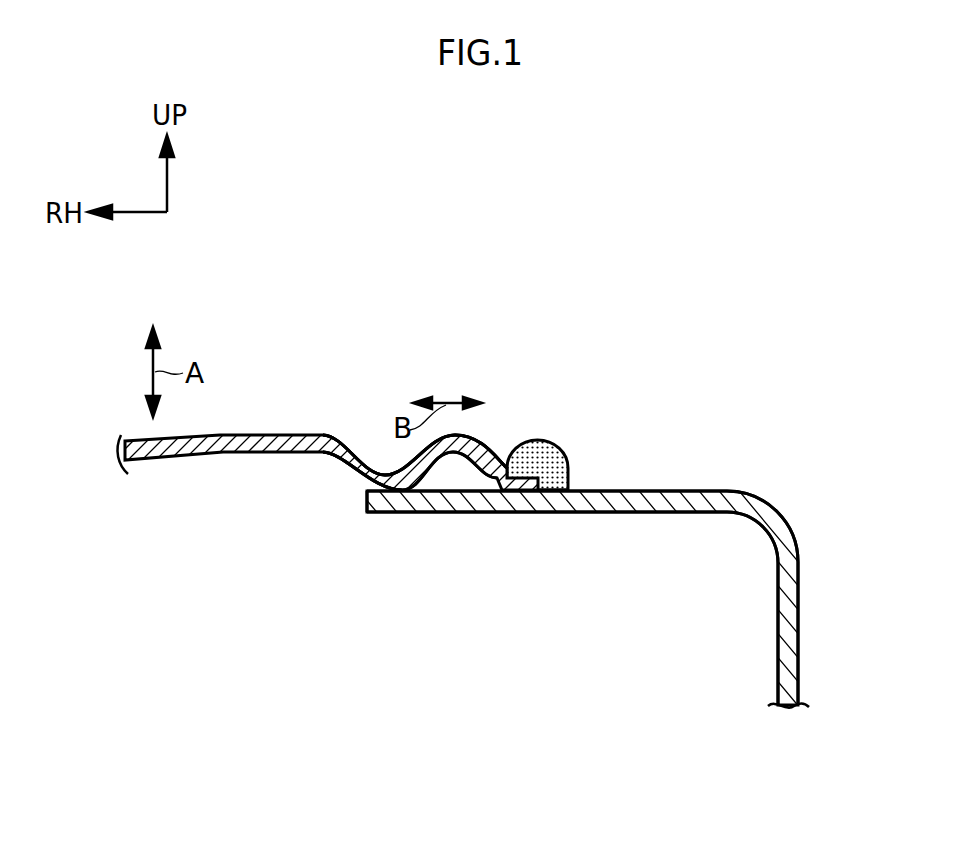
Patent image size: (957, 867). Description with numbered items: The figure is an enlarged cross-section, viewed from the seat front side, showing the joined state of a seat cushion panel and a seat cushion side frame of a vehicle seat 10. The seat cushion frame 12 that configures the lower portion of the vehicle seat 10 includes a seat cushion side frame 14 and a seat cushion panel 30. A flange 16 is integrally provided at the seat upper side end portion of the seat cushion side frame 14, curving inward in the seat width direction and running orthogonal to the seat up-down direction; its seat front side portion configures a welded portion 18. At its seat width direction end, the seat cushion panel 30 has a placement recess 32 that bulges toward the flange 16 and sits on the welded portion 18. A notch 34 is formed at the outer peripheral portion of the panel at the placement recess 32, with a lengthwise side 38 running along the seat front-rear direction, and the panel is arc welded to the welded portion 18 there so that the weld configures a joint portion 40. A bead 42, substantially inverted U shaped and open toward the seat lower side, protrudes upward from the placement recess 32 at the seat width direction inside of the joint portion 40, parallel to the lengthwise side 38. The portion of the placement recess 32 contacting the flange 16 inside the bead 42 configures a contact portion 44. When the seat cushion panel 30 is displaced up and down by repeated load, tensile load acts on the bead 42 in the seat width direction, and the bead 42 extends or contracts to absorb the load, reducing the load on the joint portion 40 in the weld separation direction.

The vehicle seat 10 is at (687, 300).
The seat cushion frame 12 is at (805, 538).
The seat cushion side frame 14 is at (800, 585).
The flange 16 is at (643, 491).
The welded portion 18 is at (543, 600).
The seat cushion panel 30 is at (246, 453).
The placement recess 32 is at (530, 390).
The notch 34 is at (563, 457).
The lengthwise side 38 is at (537, 465).
The joint portion 40 is at (549, 492).
The bead 42 is at (476, 437).
The contact portion 44 is at (383, 497).